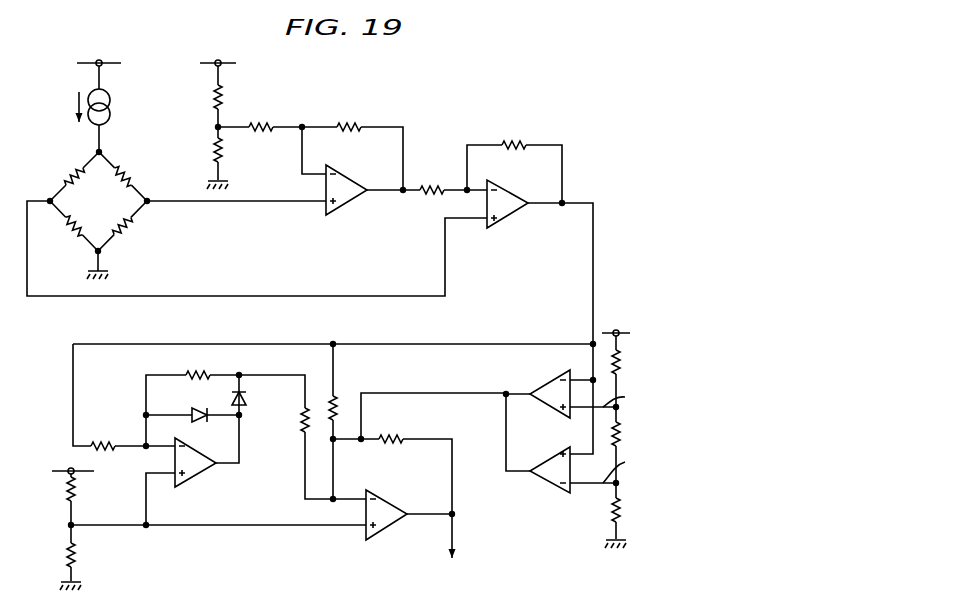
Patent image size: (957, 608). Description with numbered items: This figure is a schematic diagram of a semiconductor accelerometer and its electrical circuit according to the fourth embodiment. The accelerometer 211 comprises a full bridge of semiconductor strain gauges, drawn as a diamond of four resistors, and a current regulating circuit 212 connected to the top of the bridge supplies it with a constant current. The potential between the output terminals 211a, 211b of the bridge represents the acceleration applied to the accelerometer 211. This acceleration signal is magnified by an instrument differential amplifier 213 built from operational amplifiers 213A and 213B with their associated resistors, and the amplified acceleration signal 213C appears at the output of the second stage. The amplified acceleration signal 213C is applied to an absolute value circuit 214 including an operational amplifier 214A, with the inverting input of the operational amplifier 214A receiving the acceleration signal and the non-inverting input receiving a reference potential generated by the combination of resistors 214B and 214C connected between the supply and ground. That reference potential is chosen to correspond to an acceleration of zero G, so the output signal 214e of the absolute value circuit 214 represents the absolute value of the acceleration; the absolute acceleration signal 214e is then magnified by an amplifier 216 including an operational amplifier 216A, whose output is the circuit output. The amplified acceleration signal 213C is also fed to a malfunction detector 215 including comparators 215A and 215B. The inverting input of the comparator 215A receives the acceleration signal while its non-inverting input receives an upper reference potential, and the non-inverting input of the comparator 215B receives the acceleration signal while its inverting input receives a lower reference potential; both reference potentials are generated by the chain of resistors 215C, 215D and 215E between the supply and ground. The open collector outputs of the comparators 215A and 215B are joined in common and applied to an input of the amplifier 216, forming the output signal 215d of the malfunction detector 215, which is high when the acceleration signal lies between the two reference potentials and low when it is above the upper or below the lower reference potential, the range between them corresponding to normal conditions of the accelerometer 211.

The accelerometer 211 is at (109, 200).
The output terminal 211a is at (147, 200).
The output terminal 211b is at (50, 198).
The current regulating circuit 212 is at (112, 93).
The instrument differential amplifier 213 is at (396, 257).
The operational amplifier 213A is at (353, 207).
The operational amplifier 213B is at (516, 193).
The amplified acceleration signal 213C is at (593, 255).
The absolute value circuit 214 is at (207, 467).
The operational amplifier 214A is at (202, 473).
The resistor 214B is at (73, 497).
The resistor 214C is at (73, 558).
The output signal 214e is at (279, 373).
The malfunction detector 215 is at (570, 449).
The comparator 215A is at (545, 385).
The comparator 215B is at (553, 488).
The resistor 215C is at (618, 360).
The resistor 215D is at (616, 430).
The resistor 215E is at (618, 512).
The output signal 215d is at (400, 392).
The amplifier 216 is at (417, 468).
The operational amplifier 216A is at (387, 502).